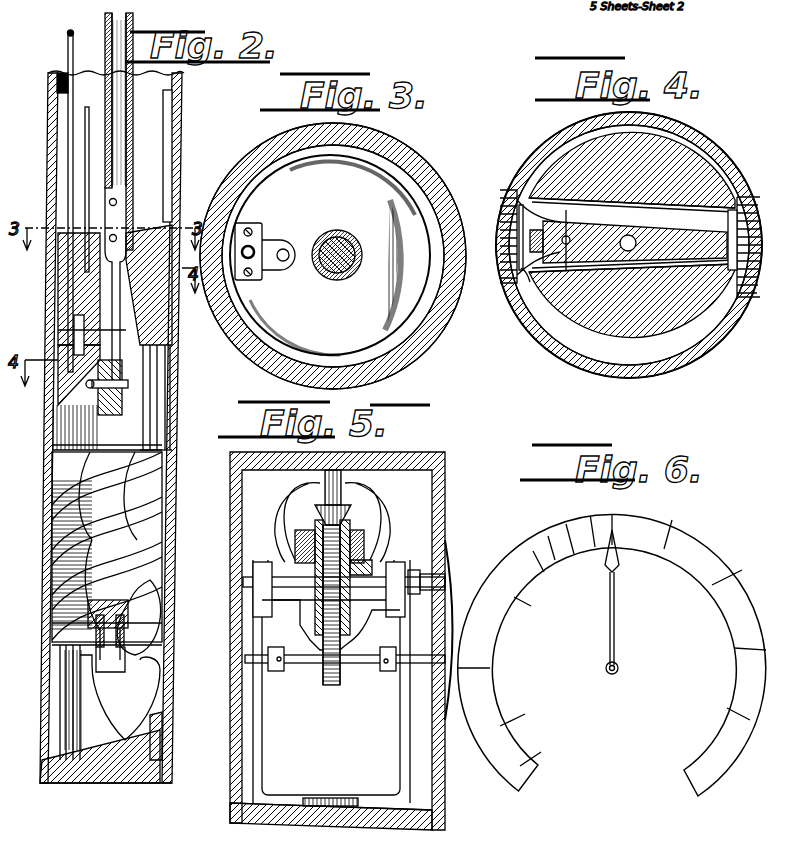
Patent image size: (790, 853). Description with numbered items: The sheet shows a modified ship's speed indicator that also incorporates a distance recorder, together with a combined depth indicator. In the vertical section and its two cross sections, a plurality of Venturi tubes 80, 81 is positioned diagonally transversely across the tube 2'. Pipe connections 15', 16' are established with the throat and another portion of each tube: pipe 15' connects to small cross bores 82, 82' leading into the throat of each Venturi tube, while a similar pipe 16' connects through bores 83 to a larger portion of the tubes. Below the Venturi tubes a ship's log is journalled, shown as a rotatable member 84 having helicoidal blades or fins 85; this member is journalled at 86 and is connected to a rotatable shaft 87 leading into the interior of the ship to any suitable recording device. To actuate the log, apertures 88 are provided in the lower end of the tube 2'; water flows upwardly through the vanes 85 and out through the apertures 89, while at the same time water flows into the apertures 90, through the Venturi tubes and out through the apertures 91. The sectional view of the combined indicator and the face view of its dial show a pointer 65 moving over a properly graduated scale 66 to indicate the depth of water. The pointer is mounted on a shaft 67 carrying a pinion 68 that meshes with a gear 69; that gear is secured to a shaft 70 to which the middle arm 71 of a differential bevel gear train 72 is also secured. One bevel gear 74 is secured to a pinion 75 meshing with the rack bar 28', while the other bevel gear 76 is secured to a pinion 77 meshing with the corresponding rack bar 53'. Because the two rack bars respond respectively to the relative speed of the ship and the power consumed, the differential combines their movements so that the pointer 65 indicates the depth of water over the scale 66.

In FIG. 2, the tube 2' is at (119, 427).
In FIG. 3, the tube 2' is at (333, 256).
In FIG. 4, the tube 2' is at (629, 240).
In FIG. 2, the pipe 15' is at (87, 174).
In FIG. 3, the pipe 15' is at (290, 275).
In FIG. 4, the pipe 15' is at (583, 240).
In FIG. 2, the pipe 16' is at (53, 201).
In FIG. 3, the pipe 16' is at (265, 238).
In FIG. 4, the pipe 16' is at (506, 242).
In FIG. 5, the rack bar 28' is at (305, 574).
In FIG. 5, the rack bar 53' is at (370, 630).
In FIG. 5, the pointer 65 is at (448, 580).
In FIG. 6, the pointer 65 is at (616, 612).
In FIG. 5, the graduated scale 66 is at (442, 515).
In FIG. 6, the graduated scale 66 is at (714, 557).
In FIG. 5, the shaft 67 is at (418, 660).
In FIG. 6, the shaft 67 is at (610, 675).
In FIG. 5, the pinion 68 is at (330, 685).
In FIG. 5, the gear 69 is at (325, 530).
In FIG. 5, the shaft 70 is at (278, 580).
In FIG. 5, the middle arm 71 is at (385, 505).
In FIG. 5, the differential bevel gear train 72 is at (352, 510).
In FIG. 5, the bevel gear 74 is at (300, 663).
In FIG. 5, the pinion 75 is at (300, 612).
In FIG. 5, the bevel gear 76 is at (355, 650).
In FIG. 5, the pinion 77 is at (375, 560).
In FIG. 4, the Venturi tube 80 is at (633, 214).
In FIG. 4, the Venturi tube 81 is at (633, 271).
In FIG. 4, the cross bore 82 is at (495, 228).
In FIG. 4, the cross bore 82' is at (494, 305).
In FIG. 4, the bore 83 is at (520, 225).
In FIG. 2, the rotatable member 84 is at (107, 547).
In FIG. 2, the helicoidal blades 85 is at (138, 612).
In FIG. 2, the journal 86 is at (115, 650).
In FIG. 2, the rotatable shaft 87 is at (122, 175).
In FIG. 3, the rotatable shaft 87 is at (338, 230).
In FIG. 2, the apertures 88 is at (55, 698).
In FIG. 2, the apertures 89 is at (152, 386).
In FIG. 4, the apertures 90 is at (520, 270).
In FIG. 4, the apertures 91 is at (760, 213).